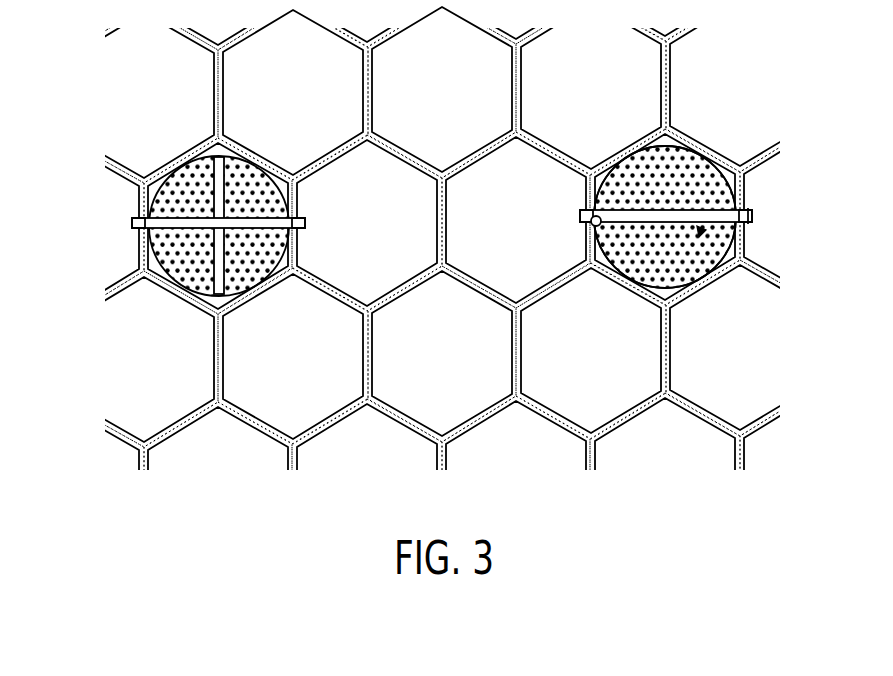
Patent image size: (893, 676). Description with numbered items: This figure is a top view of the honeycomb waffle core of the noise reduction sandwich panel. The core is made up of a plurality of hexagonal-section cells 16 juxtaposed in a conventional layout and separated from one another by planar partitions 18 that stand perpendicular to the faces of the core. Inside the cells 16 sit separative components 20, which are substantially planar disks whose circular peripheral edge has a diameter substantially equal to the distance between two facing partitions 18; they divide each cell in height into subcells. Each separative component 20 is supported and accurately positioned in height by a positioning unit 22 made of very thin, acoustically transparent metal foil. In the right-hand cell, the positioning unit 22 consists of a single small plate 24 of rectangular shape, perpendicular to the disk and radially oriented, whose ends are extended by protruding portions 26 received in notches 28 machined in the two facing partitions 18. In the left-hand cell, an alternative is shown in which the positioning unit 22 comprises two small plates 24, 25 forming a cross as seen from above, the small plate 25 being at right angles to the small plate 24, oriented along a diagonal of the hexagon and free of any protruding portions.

The cells 16 is at (308, 99).
The partitions 18 is at (622, 148).
The separative components 20 is at (640, 280).
The positioning units 22 is at (722, 272).
The small plate 24 is at (673, 217).
The small plate 25 is at (198, 282).
The protruding portions 26 is at (752, 226).
The notches 28 is at (752, 213).